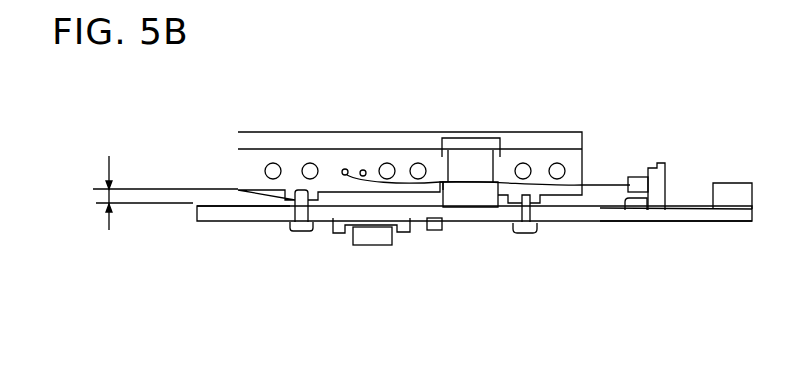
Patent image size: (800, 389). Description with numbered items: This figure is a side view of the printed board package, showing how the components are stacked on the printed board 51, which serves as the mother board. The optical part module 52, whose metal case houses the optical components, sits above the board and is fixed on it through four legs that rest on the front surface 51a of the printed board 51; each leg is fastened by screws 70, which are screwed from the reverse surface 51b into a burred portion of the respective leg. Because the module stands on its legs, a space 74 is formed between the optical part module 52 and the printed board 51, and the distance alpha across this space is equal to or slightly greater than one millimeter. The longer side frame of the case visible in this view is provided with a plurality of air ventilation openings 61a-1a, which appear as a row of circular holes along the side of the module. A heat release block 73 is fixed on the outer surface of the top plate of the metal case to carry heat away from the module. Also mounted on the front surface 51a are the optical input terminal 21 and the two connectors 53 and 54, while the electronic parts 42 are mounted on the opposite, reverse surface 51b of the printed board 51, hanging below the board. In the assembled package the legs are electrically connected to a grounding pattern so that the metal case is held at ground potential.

The optical input terminal 21 is at (640, 183).
The electronic parts 42 is at (377, 236).
The printed board 51 is at (738, 223).
The front surface 51a is at (693, 208).
The reverse surface 51b is at (680, 223).
The optical part module 52 is at (547, 132).
The connector 53 is at (733, 184).
The connector 54 is at (477, 198).
The air ventilation openings 61a-1a is at (271, 163).
The screws 70 is at (303, 232).
The heat release block 73 is at (327, 132).
The space 74 is at (268, 208).
The distance alpha is at (119, 192).